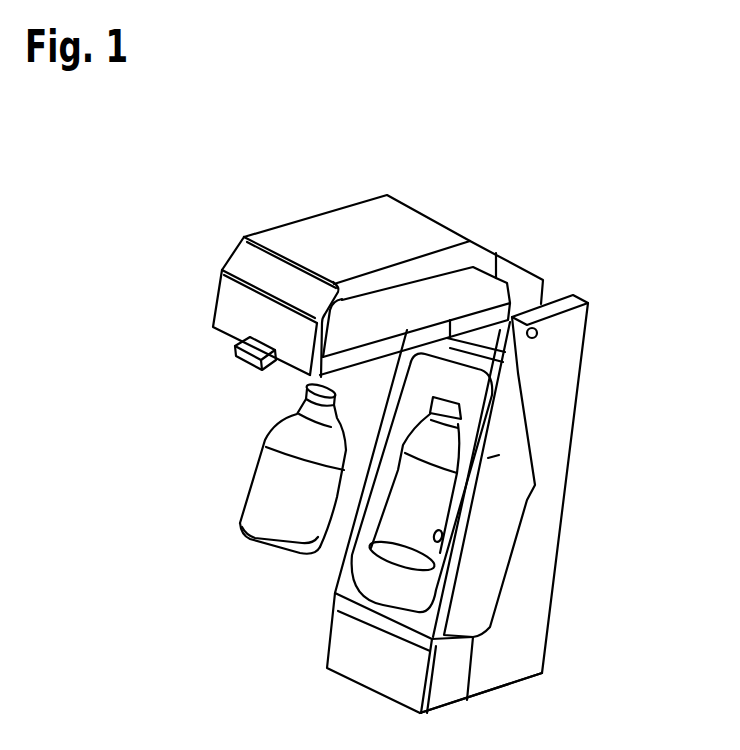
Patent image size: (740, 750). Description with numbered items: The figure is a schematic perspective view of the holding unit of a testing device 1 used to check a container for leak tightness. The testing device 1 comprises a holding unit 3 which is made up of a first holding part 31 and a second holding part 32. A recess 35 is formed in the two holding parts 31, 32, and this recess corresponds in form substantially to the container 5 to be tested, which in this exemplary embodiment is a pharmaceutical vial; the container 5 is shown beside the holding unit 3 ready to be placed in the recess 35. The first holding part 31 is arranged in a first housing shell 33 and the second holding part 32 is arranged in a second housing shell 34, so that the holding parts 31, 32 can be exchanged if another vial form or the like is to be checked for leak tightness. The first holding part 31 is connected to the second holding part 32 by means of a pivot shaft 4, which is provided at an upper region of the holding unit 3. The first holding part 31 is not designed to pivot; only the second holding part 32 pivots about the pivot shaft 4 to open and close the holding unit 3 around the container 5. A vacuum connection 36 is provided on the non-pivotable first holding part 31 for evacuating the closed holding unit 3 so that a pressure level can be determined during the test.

The testing device 1 is at (243, 198).
The holding unit 3 is at (205, 313).
The first housing shell 33 is at (428, 233).
The second holding part 32 is at (477, 295).
The pivot shaft 4 is at (538, 333).
The container 5 is at (263, 495).
The recess 35 is at (443, 452).
The vacuum connection 36 is at (433, 538).
The second housing shell 34 is at (547, 497).
The first holding part 31 is at (497, 539).